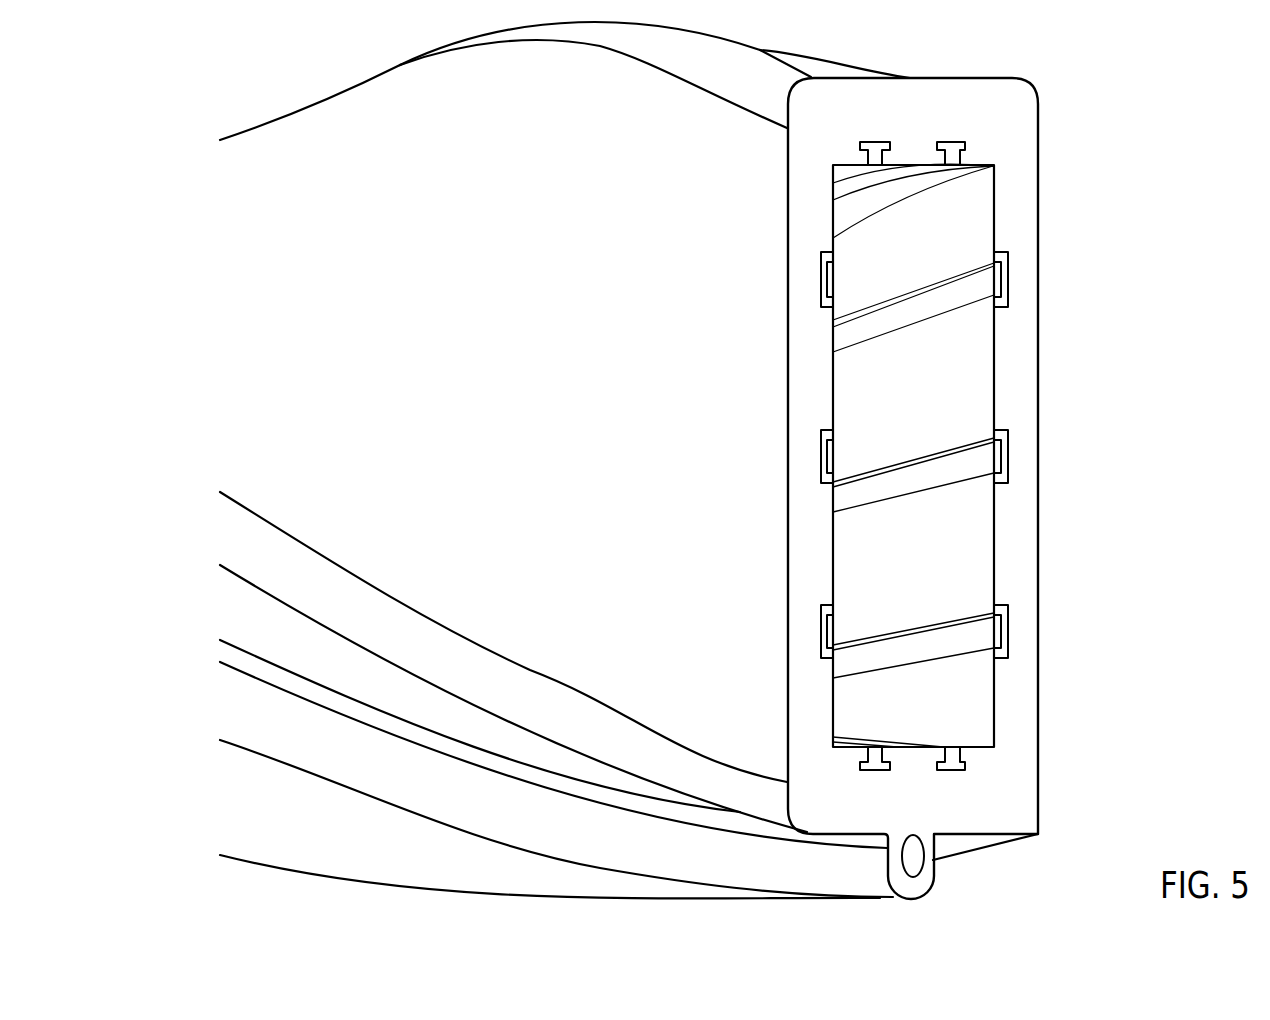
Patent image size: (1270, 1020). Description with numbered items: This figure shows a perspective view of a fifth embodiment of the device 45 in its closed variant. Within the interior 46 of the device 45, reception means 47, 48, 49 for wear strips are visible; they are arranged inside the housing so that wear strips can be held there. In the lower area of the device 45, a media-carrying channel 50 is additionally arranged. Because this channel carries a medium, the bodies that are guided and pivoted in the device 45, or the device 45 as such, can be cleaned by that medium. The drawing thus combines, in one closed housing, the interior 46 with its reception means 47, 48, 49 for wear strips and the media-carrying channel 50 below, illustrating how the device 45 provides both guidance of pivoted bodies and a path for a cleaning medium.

The device 45 is at (1138, 110).
The interior 46 is at (995, 197).
The reception means 47 is at (820, 278).
The reception means 48 is at (882, 142).
The reception means 49 is at (883, 771).
The media-carrying channel 50 is at (920, 875).